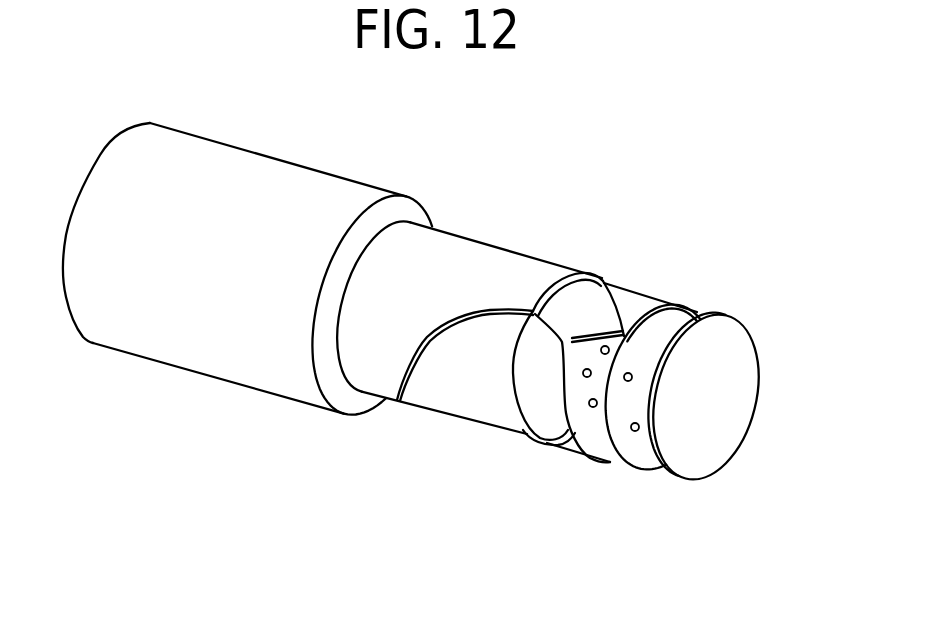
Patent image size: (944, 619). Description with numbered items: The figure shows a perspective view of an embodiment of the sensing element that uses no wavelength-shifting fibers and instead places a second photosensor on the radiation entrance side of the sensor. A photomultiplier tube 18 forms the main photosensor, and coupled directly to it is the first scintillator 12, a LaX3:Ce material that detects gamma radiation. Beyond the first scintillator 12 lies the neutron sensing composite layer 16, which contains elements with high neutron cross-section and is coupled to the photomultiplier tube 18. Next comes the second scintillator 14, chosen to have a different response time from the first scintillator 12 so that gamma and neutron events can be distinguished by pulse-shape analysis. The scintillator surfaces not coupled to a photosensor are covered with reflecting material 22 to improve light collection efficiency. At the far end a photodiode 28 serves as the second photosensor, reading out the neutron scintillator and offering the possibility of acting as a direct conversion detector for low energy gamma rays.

The first scintillator 12 is at (480, 342).
The second scintillator 14 is at (594, 410).
The neutron sensing composite layer 16 is at (580, 430).
The photomultiplier tube 18 is at (293, 188).
The reflecting material 22 is at (660, 293).
The photodiode 28 is at (697, 450).